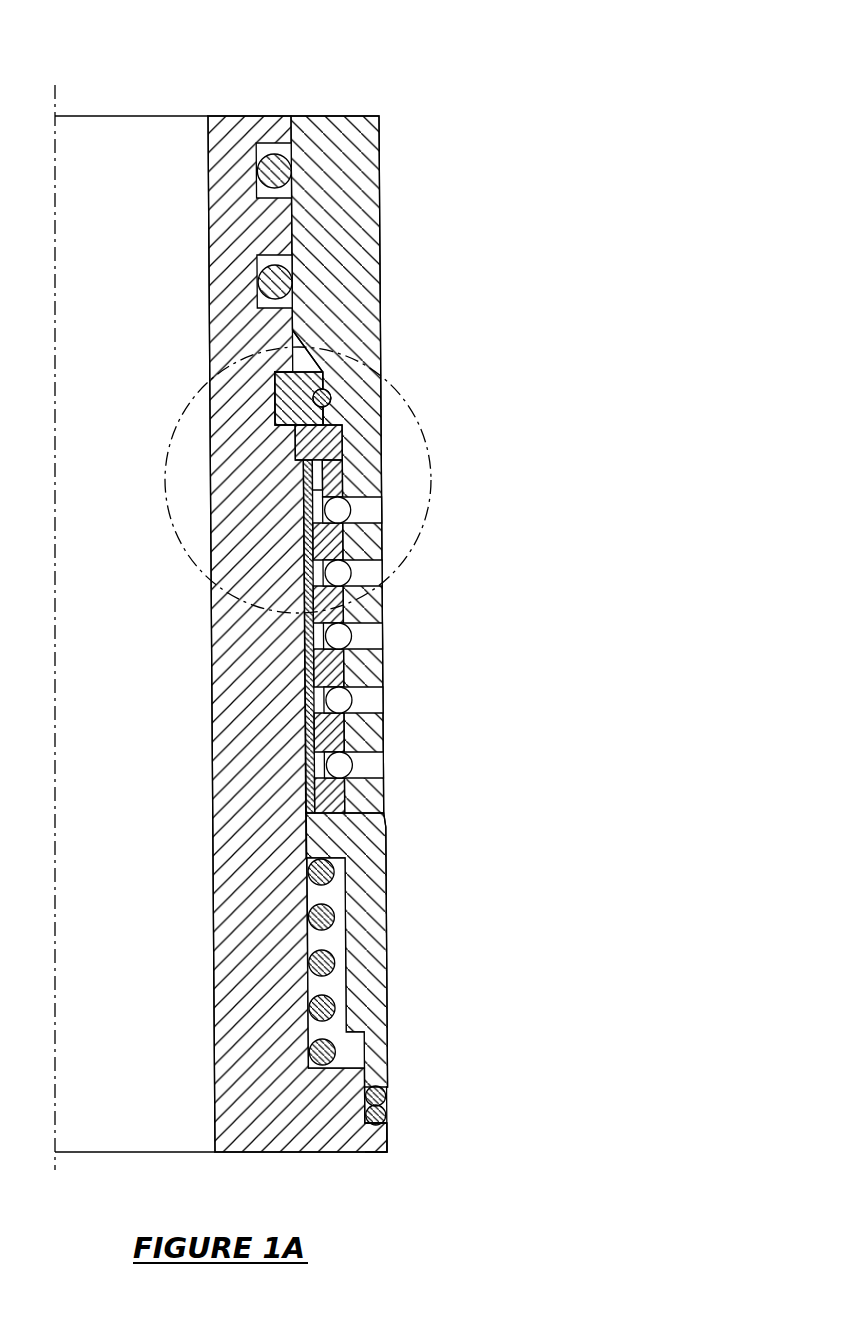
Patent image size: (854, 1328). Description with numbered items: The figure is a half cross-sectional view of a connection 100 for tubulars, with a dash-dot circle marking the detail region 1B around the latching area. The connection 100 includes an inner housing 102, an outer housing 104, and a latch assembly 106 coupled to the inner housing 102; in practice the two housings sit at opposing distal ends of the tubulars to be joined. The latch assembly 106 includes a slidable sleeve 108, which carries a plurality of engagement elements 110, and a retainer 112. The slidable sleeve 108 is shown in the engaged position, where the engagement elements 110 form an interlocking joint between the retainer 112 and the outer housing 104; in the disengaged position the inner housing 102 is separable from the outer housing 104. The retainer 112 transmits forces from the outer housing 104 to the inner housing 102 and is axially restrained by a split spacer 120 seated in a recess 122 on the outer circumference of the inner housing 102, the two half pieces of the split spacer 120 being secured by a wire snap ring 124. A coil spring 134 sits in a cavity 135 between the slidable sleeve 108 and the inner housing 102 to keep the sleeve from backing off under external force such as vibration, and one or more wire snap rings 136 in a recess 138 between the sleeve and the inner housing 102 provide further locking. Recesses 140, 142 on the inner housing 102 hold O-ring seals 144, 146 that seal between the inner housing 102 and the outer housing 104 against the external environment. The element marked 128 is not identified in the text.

The connection 100 is at (280, 60).
The inner housing 102 is at (243, 115).
The outer housing 104 is at (370, 113).
The latch assembly 106 is at (296, 696).
The slidable sleeve 108 is at (383, 908).
The engagement elements 110 is at (352, 637).
The retainer 112 is at (353, 477).
The split spacer 120 is at (277, 410).
The recess 122 is at (277, 380).
The wire snap ring 124 is at (325, 395).
The support ring 128 is at (330, 428).
The coil spring 134 is at (343, 968).
The cavity 135 is at (350, 1042).
The wire snap rings 136 is at (385, 1100).
The recess 138 is at (385, 1123).
The recess 140 is at (255, 187).
The recess 142 is at (260, 255).
The O-ring seal 144 is at (285, 172).
The O-ring seal 146 is at (283, 288).
The detail view circle 1B is at (432, 480).